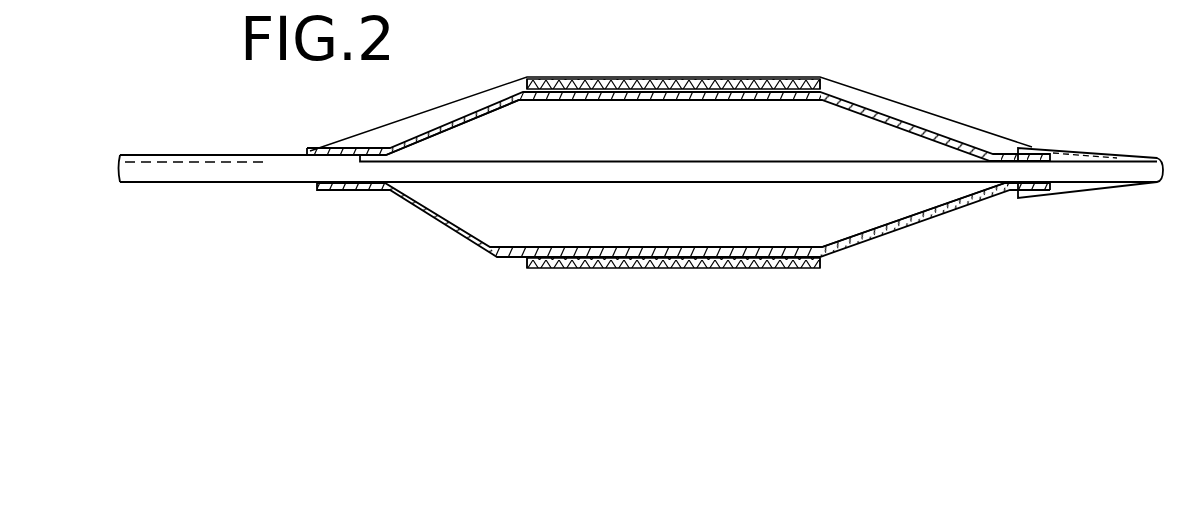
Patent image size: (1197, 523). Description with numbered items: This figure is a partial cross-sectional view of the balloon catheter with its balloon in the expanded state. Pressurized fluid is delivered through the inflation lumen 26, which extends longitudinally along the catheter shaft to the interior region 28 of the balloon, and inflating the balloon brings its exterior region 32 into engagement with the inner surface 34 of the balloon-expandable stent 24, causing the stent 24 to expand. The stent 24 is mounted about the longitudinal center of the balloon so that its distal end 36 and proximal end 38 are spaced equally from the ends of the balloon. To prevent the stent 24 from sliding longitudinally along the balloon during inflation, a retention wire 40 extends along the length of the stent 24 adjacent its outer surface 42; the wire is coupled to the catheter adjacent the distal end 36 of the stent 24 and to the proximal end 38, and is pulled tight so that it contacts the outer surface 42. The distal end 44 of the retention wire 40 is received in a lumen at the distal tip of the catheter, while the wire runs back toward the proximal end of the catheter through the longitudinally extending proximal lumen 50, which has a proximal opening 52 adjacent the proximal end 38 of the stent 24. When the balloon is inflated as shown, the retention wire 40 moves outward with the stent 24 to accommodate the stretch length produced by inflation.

The balloon-expandable stent 24 is at (726, 78).
The inflation lumen 26 is at (355, 163).
The interior region of the balloon 28 is at (514, 106).
The exterior region of the balloon 32 is at (845, 252).
The inner surface of the stent 34 is at (708, 98).
The distal end of the stent 36 is at (823, 80).
The proximal end of the stent 38 is at (522, 80).
The retention wire 40 is at (410, 112).
The outer surface of the stent 42 is at (622, 78).
The distal end of the retention wire 44 is at (1100, 150).
The proximal lumen 50 is at (222, 150).
The proximal opening 52 is at (296, 150).